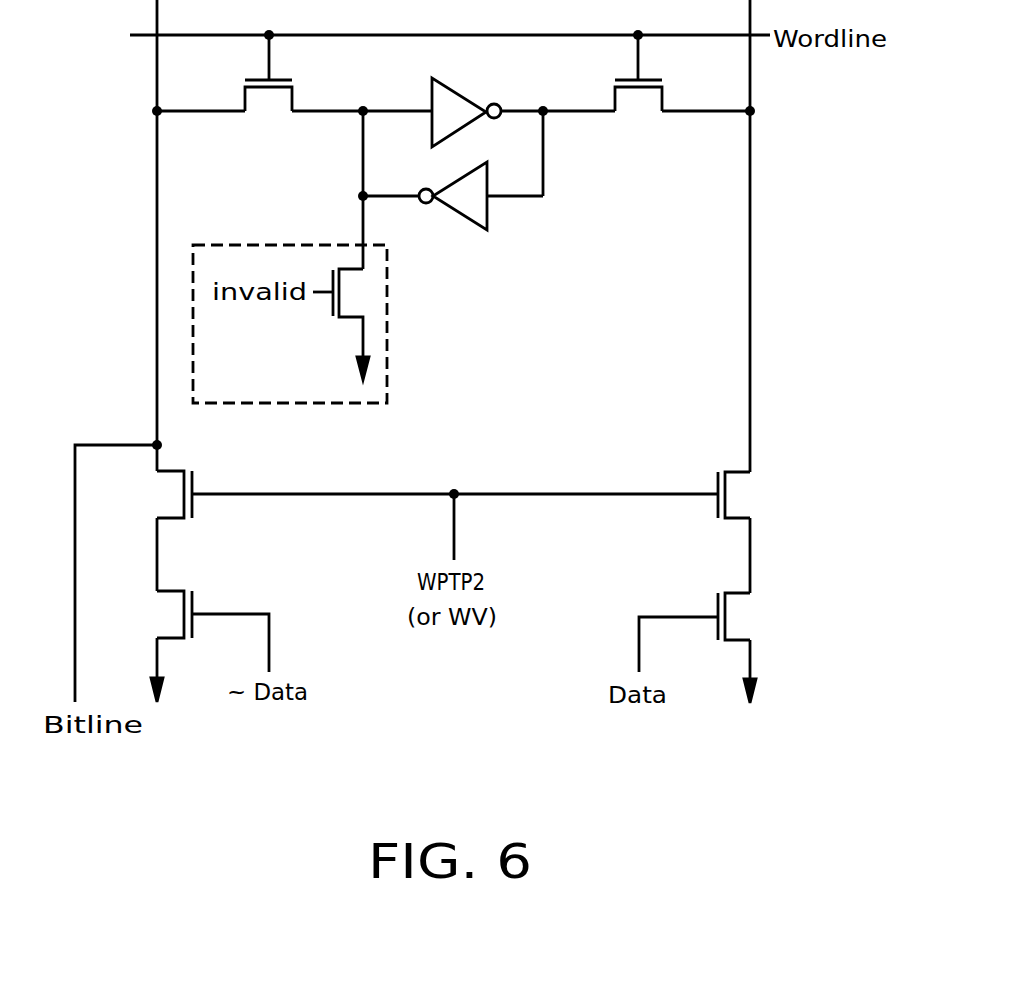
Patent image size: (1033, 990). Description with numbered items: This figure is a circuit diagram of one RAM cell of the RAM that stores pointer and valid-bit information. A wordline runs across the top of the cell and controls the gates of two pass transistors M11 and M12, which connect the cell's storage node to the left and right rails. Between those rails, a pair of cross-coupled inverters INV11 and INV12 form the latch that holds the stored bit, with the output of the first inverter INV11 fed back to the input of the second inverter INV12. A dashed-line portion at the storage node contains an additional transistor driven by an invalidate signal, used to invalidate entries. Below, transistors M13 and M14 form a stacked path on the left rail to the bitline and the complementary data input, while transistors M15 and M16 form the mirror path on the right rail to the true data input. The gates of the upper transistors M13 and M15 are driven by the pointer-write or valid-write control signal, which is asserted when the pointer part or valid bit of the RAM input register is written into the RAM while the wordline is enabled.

The pass transistor M11 is at (268, 87).
The pass transistor M12 is at (638, 87).
The inverter INV11 is at (466, 100).
The inverter INV12 is at (450, 205).
The write transistor M13 is at (153, 494).
The write transistor M14 is at (153, 614).
The write transistor M15 is at (753, 495).
The write transistor M16 is at (753, 616).